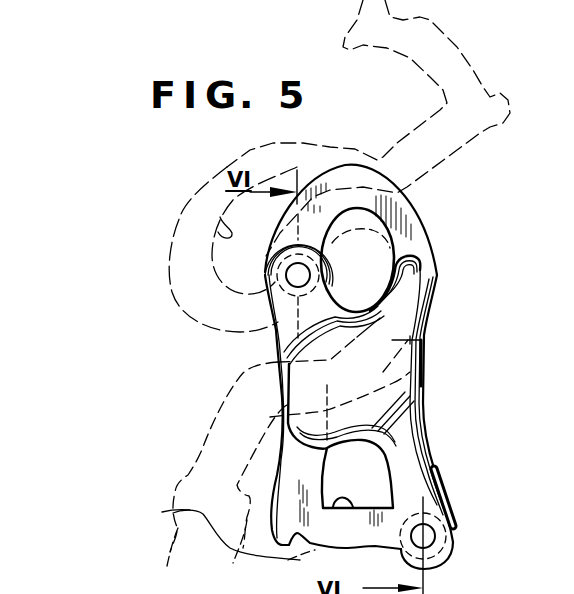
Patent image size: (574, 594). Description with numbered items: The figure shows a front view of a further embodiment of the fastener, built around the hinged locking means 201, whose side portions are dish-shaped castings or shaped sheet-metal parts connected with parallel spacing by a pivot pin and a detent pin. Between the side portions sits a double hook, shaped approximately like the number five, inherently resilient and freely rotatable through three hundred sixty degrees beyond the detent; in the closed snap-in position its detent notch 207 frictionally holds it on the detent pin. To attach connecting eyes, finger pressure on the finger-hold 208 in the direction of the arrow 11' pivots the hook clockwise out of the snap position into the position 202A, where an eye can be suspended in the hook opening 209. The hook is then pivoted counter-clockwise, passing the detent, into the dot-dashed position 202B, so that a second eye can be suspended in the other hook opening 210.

The hinged locking means 201 is at (262, 353).
The pivoted position of double hook 202A is at (476, 35).
The counter-clockwise position of double hook 202B is at (178, 476).
The hook opening 209 is at (213, 203).
The finger-hold 208 is at (162, 558).
The other hook opening 210 is at (227, 554).
The detent notch 207 is at (312, 562).
The direction arrow 11' is at (157, 536).